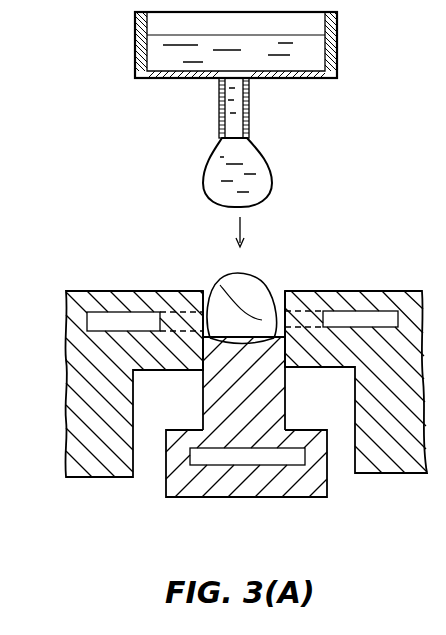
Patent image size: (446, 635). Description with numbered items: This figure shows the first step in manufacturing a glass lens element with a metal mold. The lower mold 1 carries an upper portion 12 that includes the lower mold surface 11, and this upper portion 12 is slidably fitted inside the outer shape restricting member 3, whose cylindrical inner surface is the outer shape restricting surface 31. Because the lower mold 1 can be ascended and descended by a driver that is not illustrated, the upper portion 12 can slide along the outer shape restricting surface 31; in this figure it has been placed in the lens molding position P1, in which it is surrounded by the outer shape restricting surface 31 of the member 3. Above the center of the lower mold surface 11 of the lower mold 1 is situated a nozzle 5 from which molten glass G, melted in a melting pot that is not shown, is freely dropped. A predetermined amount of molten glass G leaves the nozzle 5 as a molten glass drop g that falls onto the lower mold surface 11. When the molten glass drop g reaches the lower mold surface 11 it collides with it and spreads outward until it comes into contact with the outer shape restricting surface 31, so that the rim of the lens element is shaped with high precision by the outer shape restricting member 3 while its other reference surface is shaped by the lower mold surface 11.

The molten glass G is at (308, 58).
The nozzle 5 is at (250, 103).
The molten glass drop g is at (281, 173).
The outer shape restricting surface 31 is at (316, 185).
The lower mold surface 11 is at (243, 333).
The outer shape restricting member 3 is at (56, 392).
The lens molding position P1 is at (186, 346).
The upper portion of the lower mold 12 is at (245, 385).
The lower mold 1 is at (247, 509).